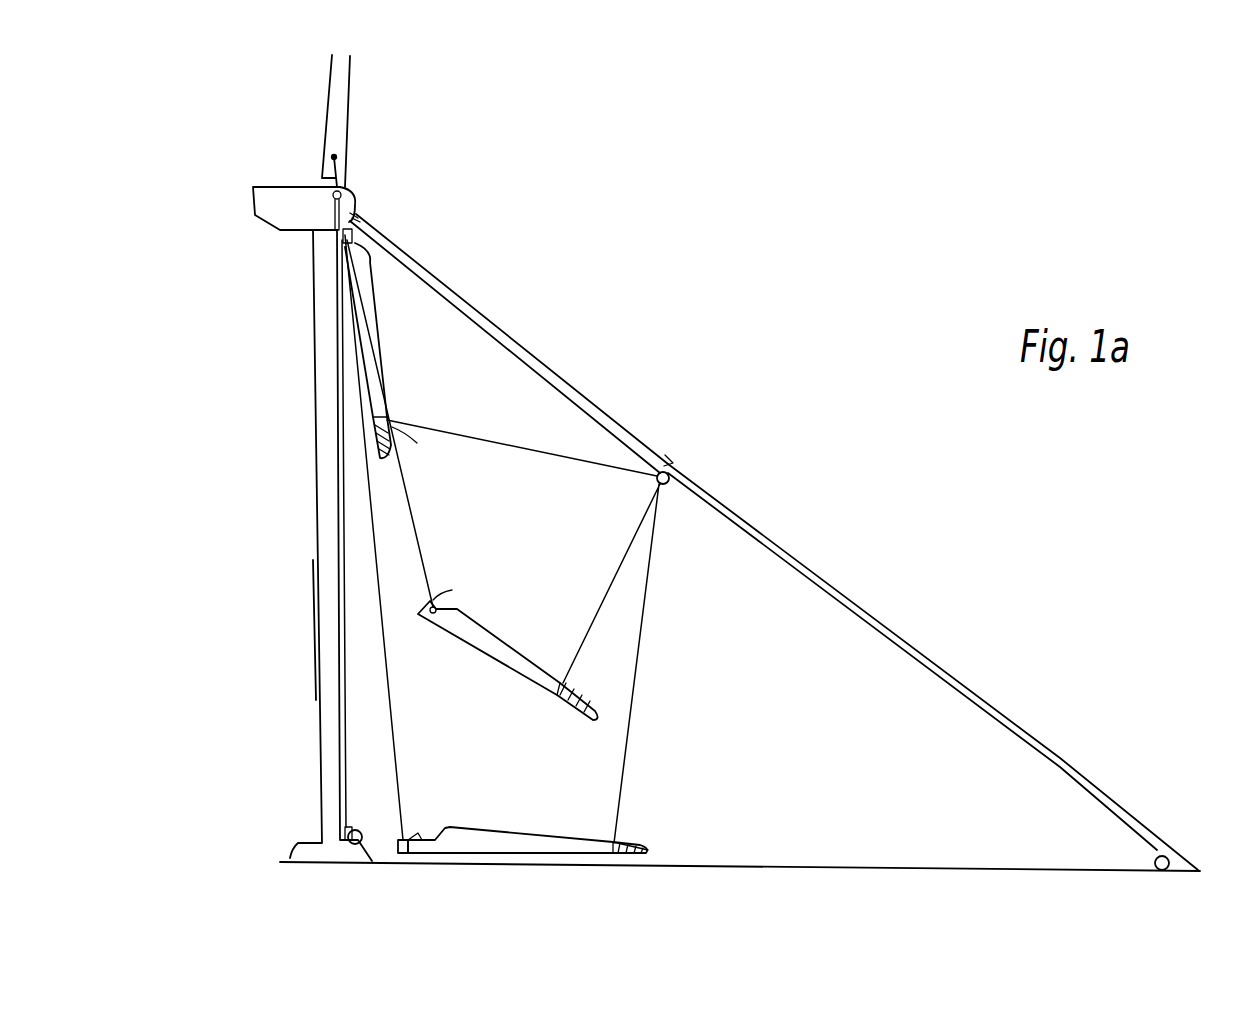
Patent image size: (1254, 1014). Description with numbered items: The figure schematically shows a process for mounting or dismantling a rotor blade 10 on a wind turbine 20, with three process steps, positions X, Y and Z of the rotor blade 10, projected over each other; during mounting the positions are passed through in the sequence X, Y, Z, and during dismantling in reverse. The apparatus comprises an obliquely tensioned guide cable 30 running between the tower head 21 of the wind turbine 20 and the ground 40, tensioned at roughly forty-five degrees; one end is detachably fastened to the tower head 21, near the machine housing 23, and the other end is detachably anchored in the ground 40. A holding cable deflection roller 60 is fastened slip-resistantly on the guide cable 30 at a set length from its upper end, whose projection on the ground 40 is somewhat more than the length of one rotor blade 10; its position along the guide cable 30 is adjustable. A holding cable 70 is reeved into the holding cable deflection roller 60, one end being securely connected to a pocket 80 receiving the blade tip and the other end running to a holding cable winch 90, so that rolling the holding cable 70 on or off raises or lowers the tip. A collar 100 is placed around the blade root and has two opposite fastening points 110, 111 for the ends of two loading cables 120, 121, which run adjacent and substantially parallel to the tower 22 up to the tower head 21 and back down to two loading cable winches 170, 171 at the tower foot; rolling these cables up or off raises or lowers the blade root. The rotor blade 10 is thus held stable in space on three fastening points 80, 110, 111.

The rotor blade 10 is at (372, 303).
The wind turbine 20 is at (328, 458).
The tower head 21 is at (392, 182).
The tower 22 is at (328, 582).
The machine housing 23 is at (275, 212).
The guide cable 30 is at (623, 423).
The ground 40 is at (740, 890).
The holding cable deflection roller 60 is at (677, 475).
The holding cable 70 is at (815, 570).
The pocket 80 is at (630, 842).
The holding cable winch 90 is at (1162, 855).
The collar 100 is at (420, 837).
The fastening point 110 is at (410, 853).
The fastening point 111 is at (422, 837).
The loading cable 120 is at (417, 540).
The loading cable 121 is at (447, 537).
The loading cable winch 170 is at (350, 833).
The loading cable winch 171 is at (347, 832).